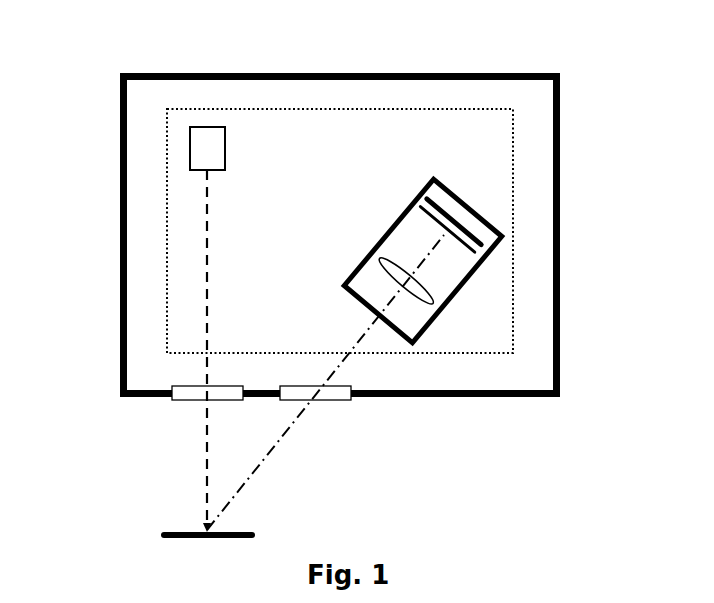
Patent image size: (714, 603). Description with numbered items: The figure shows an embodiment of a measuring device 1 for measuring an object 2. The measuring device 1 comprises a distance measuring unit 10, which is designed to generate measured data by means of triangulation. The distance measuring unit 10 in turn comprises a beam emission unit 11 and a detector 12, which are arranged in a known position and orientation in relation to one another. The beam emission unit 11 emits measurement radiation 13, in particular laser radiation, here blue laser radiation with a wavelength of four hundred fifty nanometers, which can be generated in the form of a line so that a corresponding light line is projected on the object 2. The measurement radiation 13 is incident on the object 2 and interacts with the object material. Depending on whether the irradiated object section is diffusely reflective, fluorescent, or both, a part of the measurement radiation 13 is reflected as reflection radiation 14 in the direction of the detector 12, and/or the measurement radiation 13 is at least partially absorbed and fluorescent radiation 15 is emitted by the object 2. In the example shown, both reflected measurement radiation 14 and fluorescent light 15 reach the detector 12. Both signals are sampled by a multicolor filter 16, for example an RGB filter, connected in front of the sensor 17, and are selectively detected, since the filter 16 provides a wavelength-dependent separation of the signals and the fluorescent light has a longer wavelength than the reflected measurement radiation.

The measuring device 1 is at (340, 204).
The object 2 is at (180, 505).
The distance measuring unit 10 is at (363, 160).
The beam emission unit 11 is at (131, 125).
The detector 12 is at (500, 256).
The measurement radiation 13 is at (124, 351).
The reflection radiation 14 is at (356, 379).
The fluorescent radiation 15 is at (325, 382).
The multicolor filter 16 is at (538, 291).
The sensor 17 is at (542, 253).